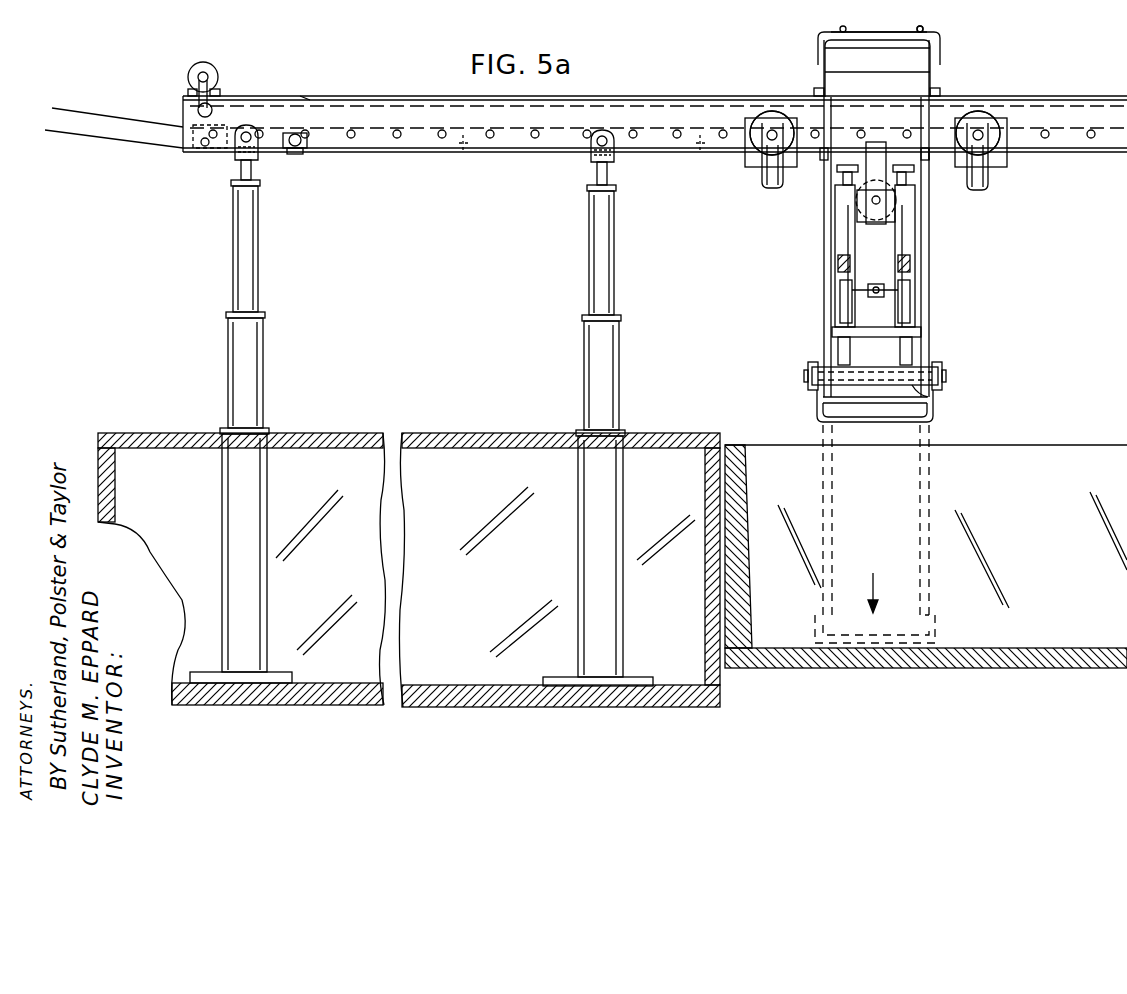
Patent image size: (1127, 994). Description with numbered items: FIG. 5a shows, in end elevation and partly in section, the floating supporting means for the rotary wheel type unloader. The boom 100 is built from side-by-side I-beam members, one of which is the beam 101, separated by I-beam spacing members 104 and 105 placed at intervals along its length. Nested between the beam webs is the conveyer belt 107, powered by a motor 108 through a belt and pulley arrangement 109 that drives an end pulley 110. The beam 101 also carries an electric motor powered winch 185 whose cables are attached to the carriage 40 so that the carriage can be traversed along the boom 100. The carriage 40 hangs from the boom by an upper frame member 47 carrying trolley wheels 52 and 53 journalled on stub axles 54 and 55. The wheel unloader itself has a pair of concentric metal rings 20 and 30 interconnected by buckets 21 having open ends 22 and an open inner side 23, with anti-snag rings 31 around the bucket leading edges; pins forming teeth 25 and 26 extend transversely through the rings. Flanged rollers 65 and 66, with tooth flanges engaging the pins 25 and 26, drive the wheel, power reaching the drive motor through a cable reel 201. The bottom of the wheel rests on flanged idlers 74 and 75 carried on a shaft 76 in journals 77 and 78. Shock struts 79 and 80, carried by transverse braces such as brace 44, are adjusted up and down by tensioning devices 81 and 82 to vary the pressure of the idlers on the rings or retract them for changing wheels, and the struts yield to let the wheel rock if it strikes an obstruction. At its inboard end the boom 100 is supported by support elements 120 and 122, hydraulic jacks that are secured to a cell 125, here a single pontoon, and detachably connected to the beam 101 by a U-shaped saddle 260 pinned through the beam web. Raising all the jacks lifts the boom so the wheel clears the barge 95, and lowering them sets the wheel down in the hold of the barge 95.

The metal ring 20 is at (942, 72).
The bucket 21 is at (922, 28).
The open end of bucket 22 is at (856, 32).
The open inner side of bucket 23 is at (858, 58).
The teeth 25 is at (814, 92).
The teeth 26 is at (940, 92).
The metal ring 30 is at (823, 230).
The anti-snag ring 31 is at (840, 28).
The carriage 40 is at (833, 243).
The transverse brace 44 is at (838, 262).
The frame member 47 is at (935, 160).
The trolley wheel 52 is at (772, 120).
The trolley wheel 53 is at (978, 122).
The stub axle 54 is at (765, 128).
The stub axle 55 is at (990, 130).
The flanged roller 65 is at (885, 210).
The flanged roller 66 is at (822, 160).
The idler 74 is at (937, 368).
The idler 75 is at (820, 366).
The shaft 76 is at (944, 376).
The journal 77 is at (830, 388).
The journal 78 is at (912, 392).
The shock strut 79 is at (905, 345).
The shock strut 80 is at (838, 345).
The tensioning device 81 is at (905, 300).
The tensioning device 82 is at (840, 300).
The barge 95 is at (1082, 587).
The boom 100 is at (655, 106).
The I-beam member 101 is at (610, 97).
The spacing member 104 is at (225, 148).
The spacing member 105 is at (458, 150).
The conveyer belt 107 is at (300, 96).
The motor 108 is at (190, 70).
The belt and pulley arrangement 109 is at (210, 80).
The end pulley 110 is at (198, 110).
The support element 120 is at (263, 366).
The support element 122 is at (622, 366).
The cell 125 is at (559, 570).
The winch 185 is at (285, 148).
The cable reel 201 is at (890, 170).
The U-shaped saddle 260 is at (590, 145).